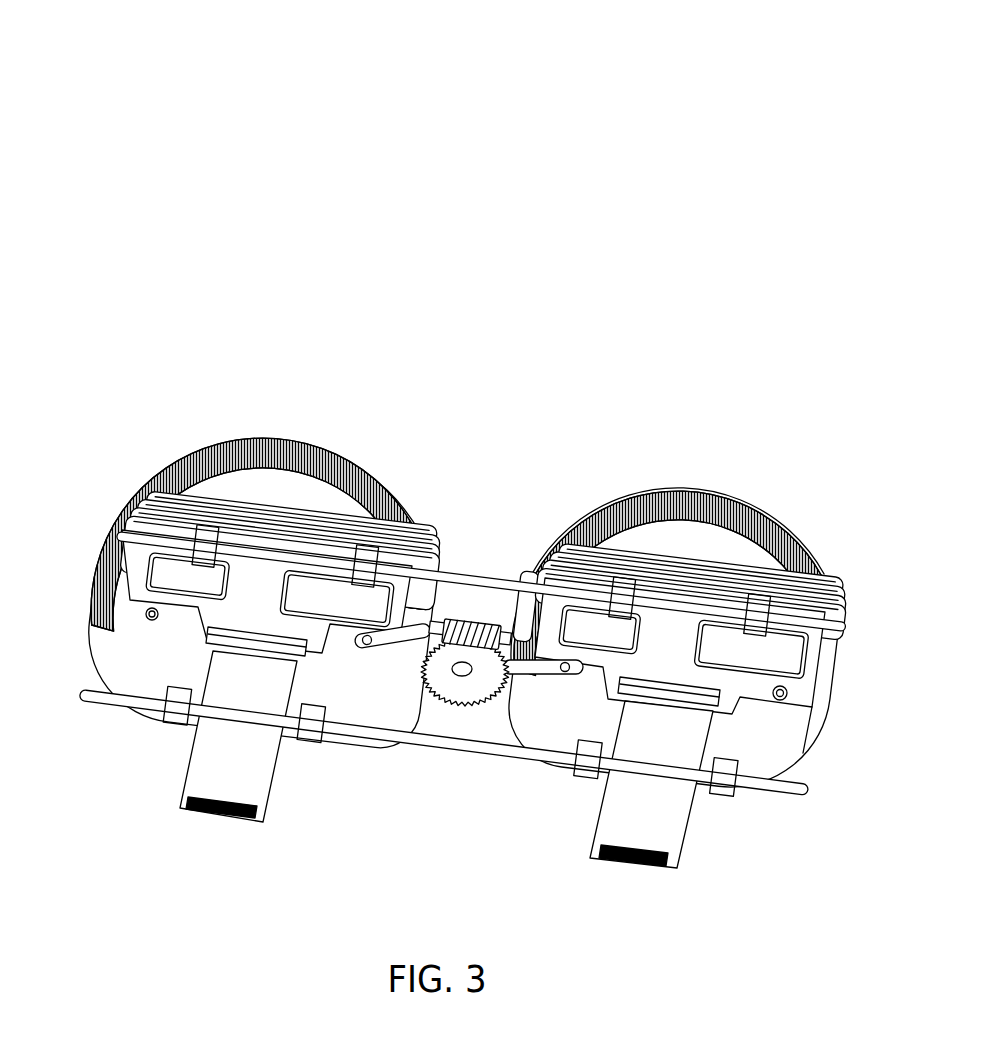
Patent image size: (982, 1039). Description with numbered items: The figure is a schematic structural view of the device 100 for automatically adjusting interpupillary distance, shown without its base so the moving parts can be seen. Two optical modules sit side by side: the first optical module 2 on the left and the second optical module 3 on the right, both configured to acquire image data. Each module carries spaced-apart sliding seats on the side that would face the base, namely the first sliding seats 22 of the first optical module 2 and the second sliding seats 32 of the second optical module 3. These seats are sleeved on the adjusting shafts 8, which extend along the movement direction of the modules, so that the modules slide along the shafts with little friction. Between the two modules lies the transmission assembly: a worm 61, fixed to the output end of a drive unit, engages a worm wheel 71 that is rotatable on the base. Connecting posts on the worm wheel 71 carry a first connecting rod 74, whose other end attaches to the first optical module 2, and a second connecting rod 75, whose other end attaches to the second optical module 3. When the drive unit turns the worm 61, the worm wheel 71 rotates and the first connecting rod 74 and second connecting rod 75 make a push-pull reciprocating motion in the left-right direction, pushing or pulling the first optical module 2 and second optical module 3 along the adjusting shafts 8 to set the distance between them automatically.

The device for automatically adjusting IPD 100 is at (465, 49).
The first optical module 2 is at (268, 444).
The second optical module 3 is at (702, 497).
The adjusting shaft 8 is at (136, 706).
The first sliding seat 22 is at (313, 728).
The second sliding seat 32 is at (723, 782).
The worm 61 is at (455, 620).
The worm wheel 71 is at (458, 690).
The first connecting rod 74 is at (383, 645).
The second connecting rod 75 is at (535, 673).